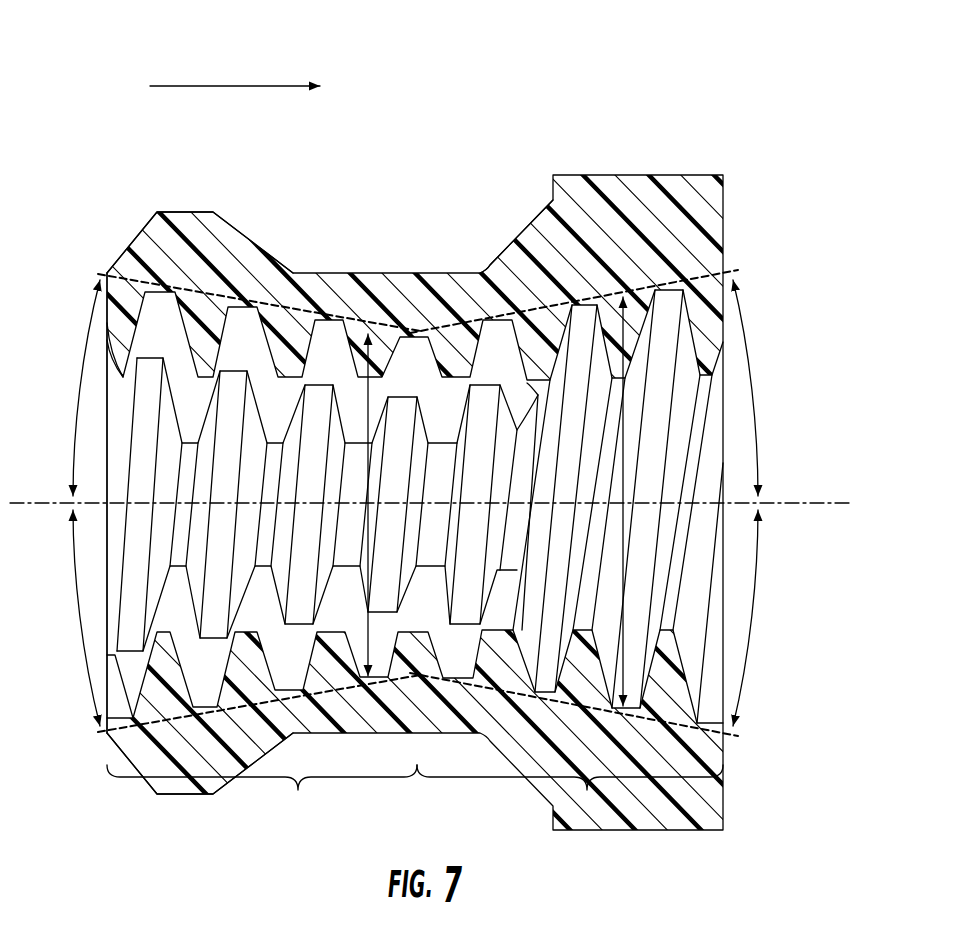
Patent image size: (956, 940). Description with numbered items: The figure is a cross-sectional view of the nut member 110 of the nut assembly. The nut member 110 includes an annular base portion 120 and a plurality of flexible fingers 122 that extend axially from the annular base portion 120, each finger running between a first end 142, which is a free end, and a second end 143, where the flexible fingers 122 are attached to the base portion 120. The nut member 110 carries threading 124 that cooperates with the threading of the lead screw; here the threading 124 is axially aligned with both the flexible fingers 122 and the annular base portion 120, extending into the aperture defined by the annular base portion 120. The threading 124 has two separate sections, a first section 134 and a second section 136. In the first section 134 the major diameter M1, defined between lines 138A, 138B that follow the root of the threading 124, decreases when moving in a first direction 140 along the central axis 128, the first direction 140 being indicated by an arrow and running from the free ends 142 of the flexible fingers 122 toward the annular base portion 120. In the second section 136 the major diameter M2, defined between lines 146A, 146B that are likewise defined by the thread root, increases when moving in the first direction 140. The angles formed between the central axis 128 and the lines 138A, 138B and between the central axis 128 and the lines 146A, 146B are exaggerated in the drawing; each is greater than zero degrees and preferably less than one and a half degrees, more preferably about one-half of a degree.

The nut member 110 is at (753, 148).
The annular base portion 120 is at (583, 177).
The flexible fingers 122 is at (187, 213).
The threading 124 is at (222, 345).
The central axis 128 is at (790, 503).
The first section of threading 134 is at (262, 796).
The second section of threading 136 is at (570, 796).
The line defined by the root of threading 138A is at (288, 305).
The line defined by the root of threading 138B is at (337, 687).
The first direction 140 is at (232, 86).
The first end 142 is at (103, 320).
The second end 143 is at (507, 276).
The line defined by the root of threading 146A is at (583, 293).
The line defined by the root of threading 146B is at (598, 717).
The major diameter M1 is at (368, 395).
The major diameter M2 is at (627, 320).